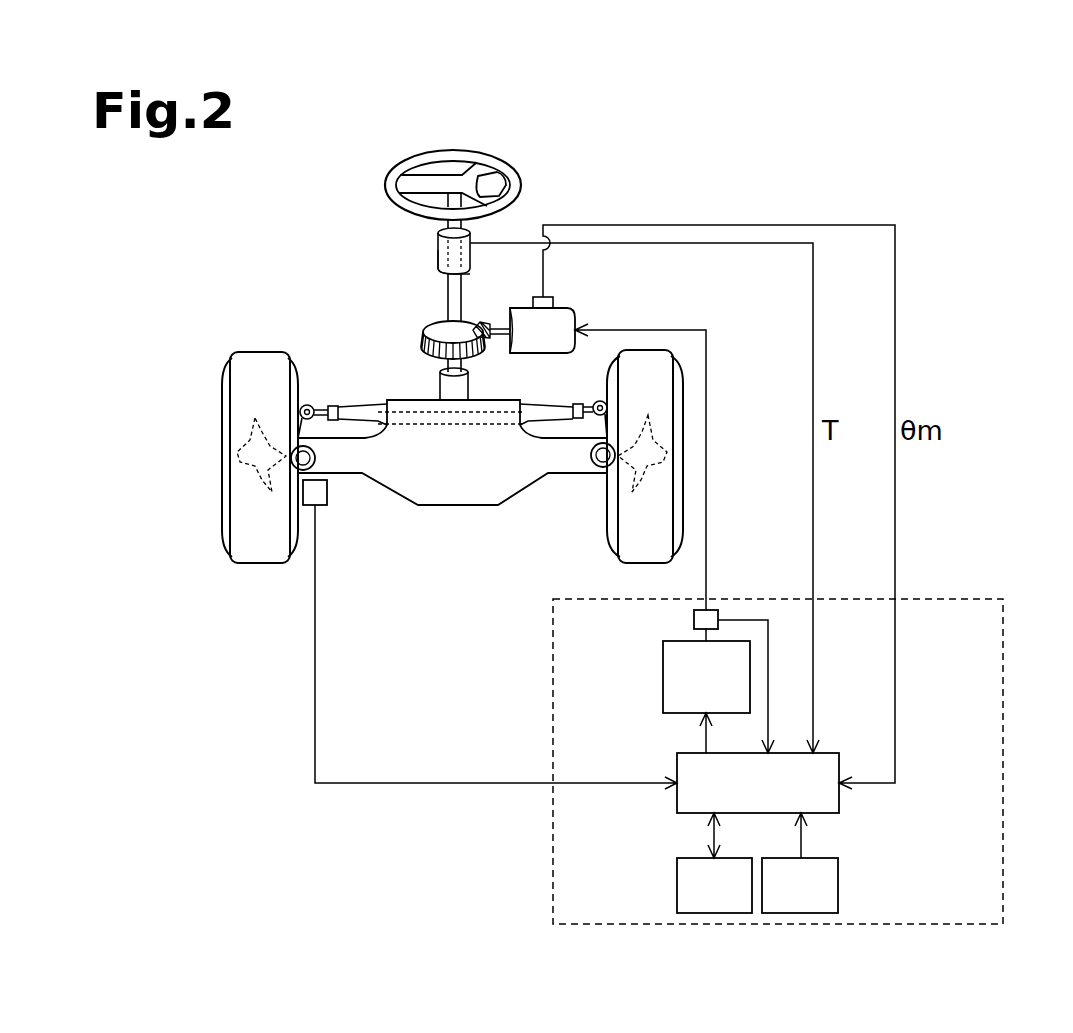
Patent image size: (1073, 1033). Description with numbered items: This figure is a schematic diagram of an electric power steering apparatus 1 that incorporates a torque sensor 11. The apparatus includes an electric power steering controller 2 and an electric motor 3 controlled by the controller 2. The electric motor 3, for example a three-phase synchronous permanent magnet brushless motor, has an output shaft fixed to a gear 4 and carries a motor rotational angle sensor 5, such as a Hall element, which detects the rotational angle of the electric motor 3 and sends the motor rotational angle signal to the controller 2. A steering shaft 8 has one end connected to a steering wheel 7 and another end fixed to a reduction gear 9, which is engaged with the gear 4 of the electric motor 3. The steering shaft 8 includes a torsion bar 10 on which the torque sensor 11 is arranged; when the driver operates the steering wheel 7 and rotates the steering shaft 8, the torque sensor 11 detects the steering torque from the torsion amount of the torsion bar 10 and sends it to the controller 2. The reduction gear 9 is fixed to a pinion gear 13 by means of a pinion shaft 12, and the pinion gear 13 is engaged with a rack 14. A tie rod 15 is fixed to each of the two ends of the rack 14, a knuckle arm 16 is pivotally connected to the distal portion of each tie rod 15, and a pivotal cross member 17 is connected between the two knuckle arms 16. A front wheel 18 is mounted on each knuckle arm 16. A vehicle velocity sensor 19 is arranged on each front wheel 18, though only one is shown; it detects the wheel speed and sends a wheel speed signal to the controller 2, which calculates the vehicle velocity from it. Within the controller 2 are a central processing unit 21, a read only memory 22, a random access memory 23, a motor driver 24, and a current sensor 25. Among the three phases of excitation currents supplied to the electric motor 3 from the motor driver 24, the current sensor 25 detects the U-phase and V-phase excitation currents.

The electric power steering apparatus 1 is at (203, 198).
The electric power steering controller 2 is at (1003, 605).
The electric motor 3 is at (551, 355).
The gear 4 is at (479, 322).
The motor rotational angle sensor 5 is at (532, 297).
The steering wheel 7 is at (521, 178).
The steering shaft 8 is at (470, 233).
The reduction gear 9 is at (423, 332).
The torsion bar 10 is at (436, 248).
The torque sensor 11 is at (438, 262).
The pinion shaft 12 is at (441, 366).
The pinion gear 13 is at (470, 392).
The rack 14 is at (413, 426).
The tie rod 15 is at (323, 405).
The knuckle arm 16 is at (452, 437).
The pivotal cross member 17 is at (400, 507).
The front wheel 18 is at (259, 563).
The vehicle velocity sensor 19 is at (328, 490).
The central processing unit 21 is at (830, 752).
The read only memory 22 is at (840, 886).
The random access memory 23 is at (676, 885).
The motor driver 24 is at (662, 675).
The current sensor 25 is at (693, 618).